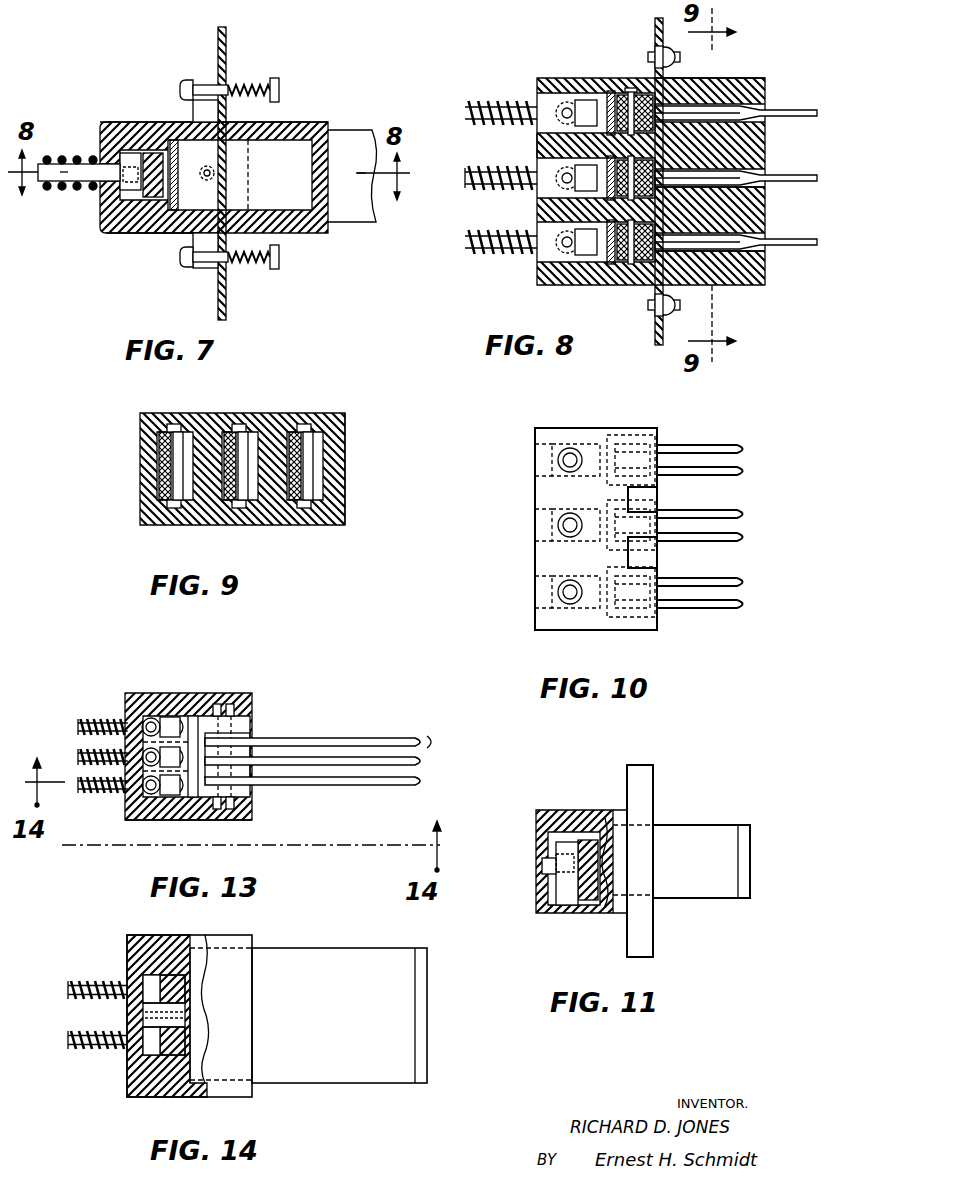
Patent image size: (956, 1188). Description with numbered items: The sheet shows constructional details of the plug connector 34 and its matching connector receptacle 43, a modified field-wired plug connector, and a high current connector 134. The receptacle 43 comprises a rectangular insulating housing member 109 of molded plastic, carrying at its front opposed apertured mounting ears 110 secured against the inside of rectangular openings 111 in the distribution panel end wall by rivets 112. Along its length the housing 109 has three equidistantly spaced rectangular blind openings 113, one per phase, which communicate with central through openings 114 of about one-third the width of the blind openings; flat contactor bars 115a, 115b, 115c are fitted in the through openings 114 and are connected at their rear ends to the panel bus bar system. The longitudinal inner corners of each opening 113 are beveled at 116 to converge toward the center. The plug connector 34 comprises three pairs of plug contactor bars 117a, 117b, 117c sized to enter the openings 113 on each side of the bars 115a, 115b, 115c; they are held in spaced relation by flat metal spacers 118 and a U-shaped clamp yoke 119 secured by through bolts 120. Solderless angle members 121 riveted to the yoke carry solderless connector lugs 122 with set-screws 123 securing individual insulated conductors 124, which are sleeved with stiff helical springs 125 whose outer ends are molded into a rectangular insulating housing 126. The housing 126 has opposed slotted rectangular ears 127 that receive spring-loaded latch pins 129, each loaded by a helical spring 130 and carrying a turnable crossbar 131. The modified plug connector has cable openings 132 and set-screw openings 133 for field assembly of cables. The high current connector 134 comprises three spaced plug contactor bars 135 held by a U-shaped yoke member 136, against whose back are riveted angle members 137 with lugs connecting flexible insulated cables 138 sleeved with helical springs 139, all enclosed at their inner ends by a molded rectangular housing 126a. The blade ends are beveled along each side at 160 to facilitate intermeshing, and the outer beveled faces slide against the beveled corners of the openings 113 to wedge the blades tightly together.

In FIG. 7, the plug connector 34 is at (118, 122).
In FIG. 7, the connector receptacle 43 is at (318, 125).
In FIG. 8, the connector receptacle 43 is at (760, 77).
In FIG. 8, the insulating housing member 109 is at (768, 82).
In FIG. 9, the insulating housing member 109 is at (345, 418).
In FIG. 8, the mounting ear 110 is at (675, 55).
In FIG. 8, the rectangular opening 111 is at (674, 78).
In FIG. 8, the rivet 112 is at (655, 48).
In FIG. 8, the rectangular blind opening 113 is at (702, 82).
In FIG. 9, the rectangular blind opening 113 is at (338, 470).
In FIG. 8, the through opening 114 is at (770, 106).
In FIG. 8, the flat contactor bar 115a is at (808, 107).
In FIG. 9, the flat contactor bar 115a is at (180, 430).
In FIG. 7, the flat contactor bar 115b is at (358, 140).
In FIG. 8, the flat contactor bar 115b is at (805, 175).
In FIG. 9, the flat contactor bar 115b is at (245, 430).
In FIG. 8, the flat contactor bar 115c is at (805, 244).
In FIG. 9, the flat contactor bar 115c is at (308, 430).
In FIG. 8, the beveled inner corner 116 is at (766, 210).
In FIG. 8, the plug contactor bar 117a is at (640, 93).
In FIG. 9, the plug contactor bar 117a is at (178, 509).
In FIG. 8, the plug contactor bar 117b is at (766, 152).
In FIG. 9, the plug contactor bar 117b is at (246, 509).
In FIG. 8, the plug contactor bar 117c is at (726, 286).
In FIG. 9, the plug contactor bar 117c is at (308, 509).
In FIG. 8, the flat metal spacer 118 is at (613, 79).
In FIG. 7, the U-shaped clamp yoke 119 is at (179, 166).
In FIG. 8, the U-shaped clamp yoke 119 is at (607, 82).
In FIG. 7, the through bolt 120 is at (205, 178).
In FIG. 8, the through bolt 120 is at (624, 78).
In FIG. 7, the solderless angle member 121 is at (153, 210).
In FIG. 8, the solderless angle member 121 is at (538, 146).
In FIG. 7, the solderless connector lug 122 is at (133, 160).
In FIG. 8, the solderless connector lug 122 is at (575, 92).
In FIG. 7, the set-screw 123 is at (128, 224).
In FIG. 7, the insulated conductor 124 is at (80, 163).
In FIG. 8, the insulated conductor 124 is at (505, 124).
In FIG. 7, the helical spring 125 is at (80, 190).
In FIG. 8, the helical spring 125 is at (470, 190).
In FIG. 7, the insulating housing 126 is at (103, 125).
In FIG. 13, the rectangular housing 126a is at (197, 822).
In FIG. 7, the rectangular ear 127 is at (218, 110).
In FIG. 7, the latch pin 129 is at (203, 88).
In FIG. 7, the helical spring 130 is at (250, 86).
In FIG. 7, the crossbar 131 is at (182, 86).
In FIG. 10, the cable opening 132 is at (535, 506).
In FIG. 11, the cable opening 132 is at (541, 862).
In FIG. 10, the set-screw opening 133 is at (570, 473).
In FIG. 11, the set-screw opening 133 is at (572, 900).
In FIG. 13, the high current connector 134 is at (250, 694).
In FIG. 14, the high current connector 134 is at (252, 940).
In FIG. 13, the plug contactor bar 135 is at (360, 766).
In FIG. 14, the plug contactor bar 135 is at (352, 983).
In FIG. 13, the U-shaped yoke member 136 is at (193, 716).
In FIG. 14, the U-shaped yoke member 136 is at (198, 946).
In FIG. 13, the angle member 137 is at (165, 718).
In FIG. 14, the angle member 137 is at (185, 1033).
In FIG. 13, the flexible insulated cable 138 is at (78, 785).
In FIG. 14, the flexible insulated cable 138 is at (70, 1042).
In FIG. 13, the helical spring 139 is at (96, 720).
In FIG. 14, the helical spring 139 is at (120, 1000).
In FIG. 10, the beveled end 160 is at (746, 449).
In FIG. 13, the beveled end 160 is at (432, 744).
In FIG. 14, the beveled end 160 is at (425, 962).